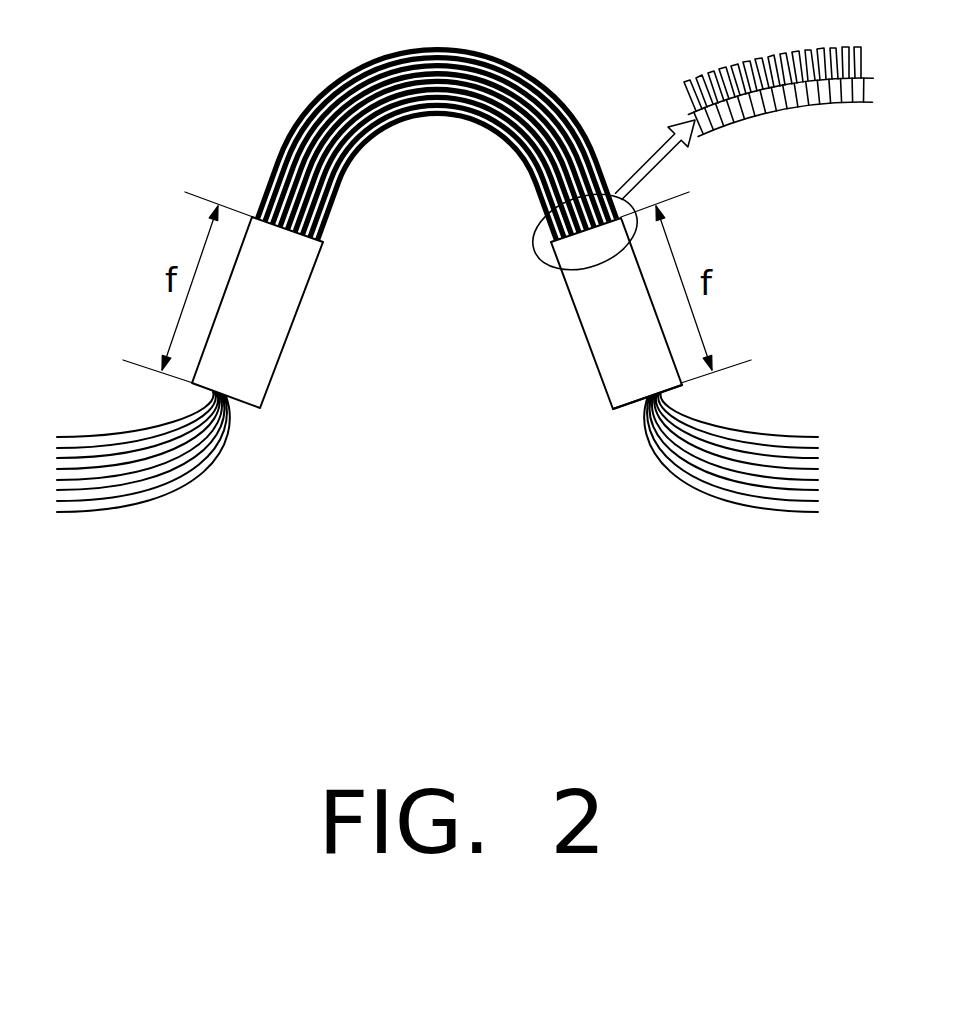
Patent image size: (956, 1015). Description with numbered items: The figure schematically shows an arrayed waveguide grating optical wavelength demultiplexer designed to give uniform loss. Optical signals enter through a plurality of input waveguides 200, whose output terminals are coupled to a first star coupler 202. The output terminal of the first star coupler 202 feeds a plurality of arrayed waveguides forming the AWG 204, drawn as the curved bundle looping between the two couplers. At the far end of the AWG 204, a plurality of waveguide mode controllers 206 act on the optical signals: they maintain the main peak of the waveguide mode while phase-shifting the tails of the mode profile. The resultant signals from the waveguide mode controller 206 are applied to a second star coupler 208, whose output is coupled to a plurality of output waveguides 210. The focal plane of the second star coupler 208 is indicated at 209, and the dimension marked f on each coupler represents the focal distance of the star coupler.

The input waveguides 200 is at (138, 415).
The first star coupler 202 is at (289, 333).
The arrayed waveguide grating (AWG) 204 is at (435, 115).
The waveguide mode controller 206 is at (535, 252).
The second star coupler 208 is at (585, 335).
The focal plane of the second star coupler 209 is at (619, 409).
The output waveguides 210 is at (743, 518).